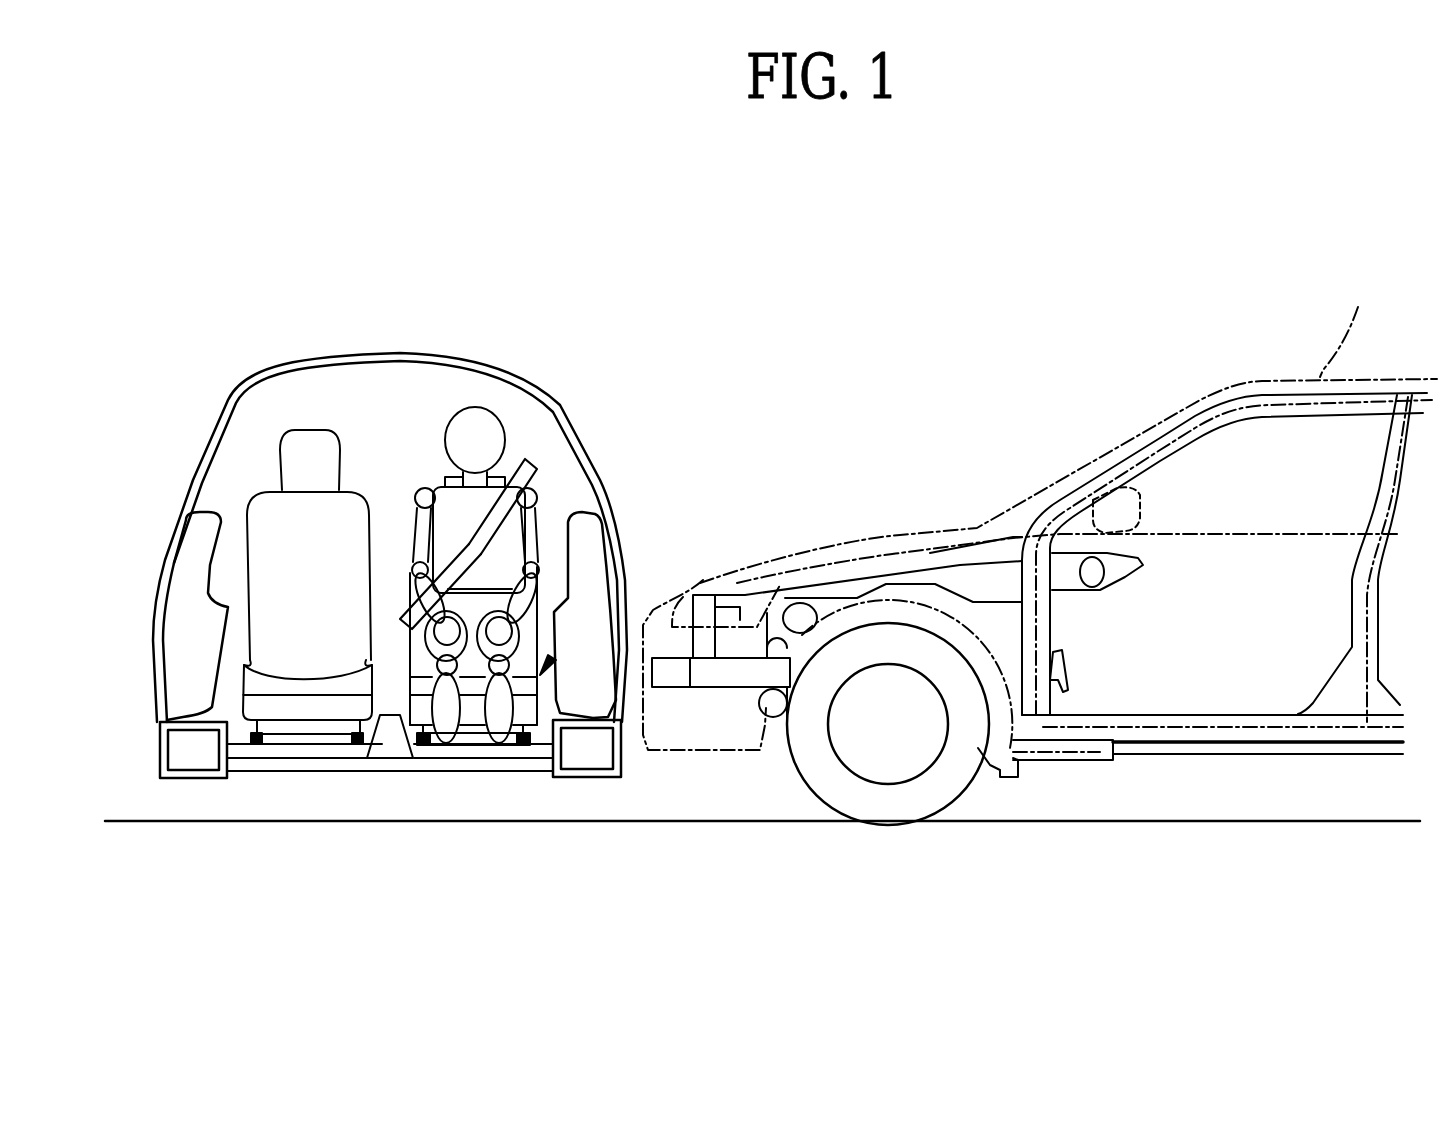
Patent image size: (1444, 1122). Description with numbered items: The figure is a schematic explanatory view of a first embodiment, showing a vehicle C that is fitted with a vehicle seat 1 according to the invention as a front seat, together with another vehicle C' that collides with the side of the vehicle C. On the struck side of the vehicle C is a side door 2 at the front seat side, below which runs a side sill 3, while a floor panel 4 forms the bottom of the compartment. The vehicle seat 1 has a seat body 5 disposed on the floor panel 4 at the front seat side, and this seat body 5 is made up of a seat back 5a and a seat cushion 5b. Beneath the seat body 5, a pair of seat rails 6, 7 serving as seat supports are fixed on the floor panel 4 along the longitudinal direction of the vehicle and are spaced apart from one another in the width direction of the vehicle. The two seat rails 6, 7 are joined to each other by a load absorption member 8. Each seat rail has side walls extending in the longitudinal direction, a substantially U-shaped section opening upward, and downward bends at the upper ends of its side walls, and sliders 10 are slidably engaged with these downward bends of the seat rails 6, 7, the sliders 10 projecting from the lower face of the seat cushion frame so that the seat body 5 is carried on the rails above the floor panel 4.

The vehicle seat 1 is at (543, 671).
The side door 2 is at (157, 636).
The side sill 3 is at (133, 778).
The floor panel 4 is at (302, 745).
The seat body 5 is at (417, 445).
The seat back 5a is at (405, 590).
The seat cushion 5b is at (403, 685).
The seat rail 6 is at (417, 746).
The seat rail 7 is at (522, 738).
The load absorption member 8 is at (471, 745).
The slider 10 is at (427, 730).
The vehicle C is at (390, 494).
The another vehicle C' is at (1040, 545).